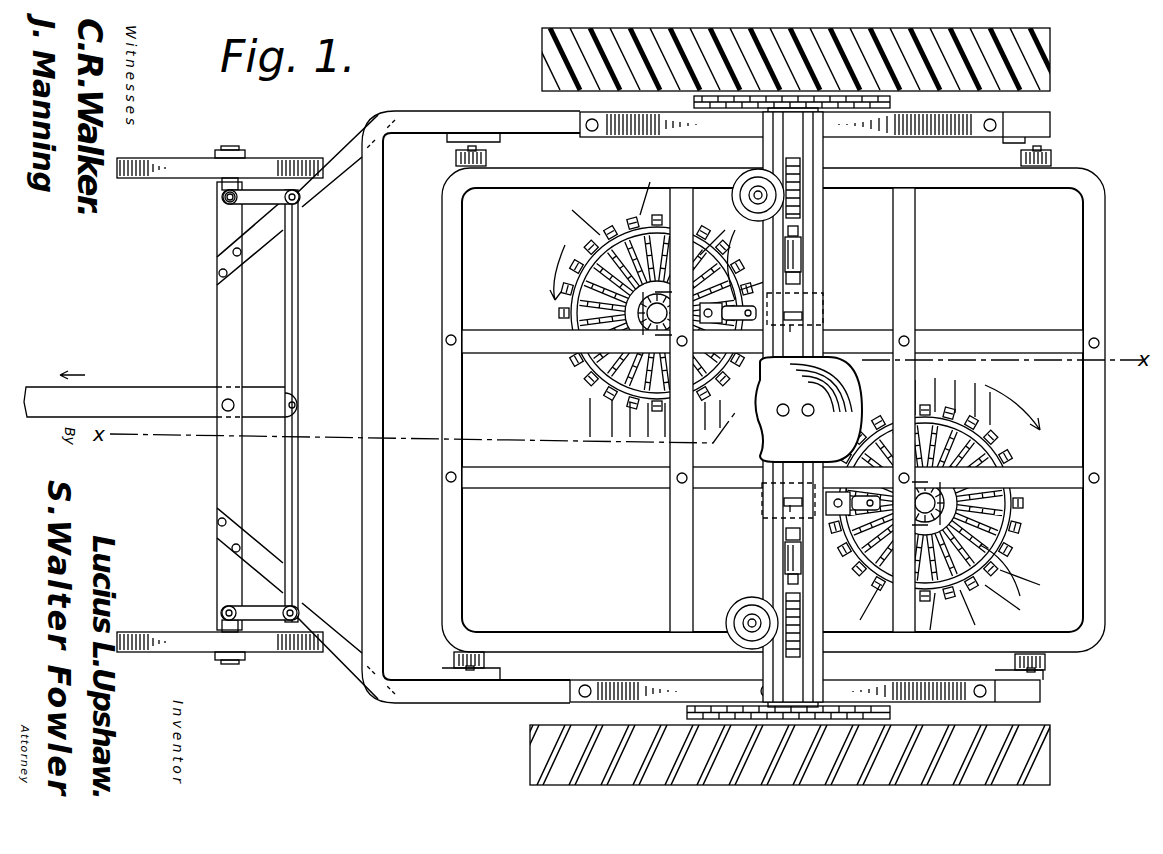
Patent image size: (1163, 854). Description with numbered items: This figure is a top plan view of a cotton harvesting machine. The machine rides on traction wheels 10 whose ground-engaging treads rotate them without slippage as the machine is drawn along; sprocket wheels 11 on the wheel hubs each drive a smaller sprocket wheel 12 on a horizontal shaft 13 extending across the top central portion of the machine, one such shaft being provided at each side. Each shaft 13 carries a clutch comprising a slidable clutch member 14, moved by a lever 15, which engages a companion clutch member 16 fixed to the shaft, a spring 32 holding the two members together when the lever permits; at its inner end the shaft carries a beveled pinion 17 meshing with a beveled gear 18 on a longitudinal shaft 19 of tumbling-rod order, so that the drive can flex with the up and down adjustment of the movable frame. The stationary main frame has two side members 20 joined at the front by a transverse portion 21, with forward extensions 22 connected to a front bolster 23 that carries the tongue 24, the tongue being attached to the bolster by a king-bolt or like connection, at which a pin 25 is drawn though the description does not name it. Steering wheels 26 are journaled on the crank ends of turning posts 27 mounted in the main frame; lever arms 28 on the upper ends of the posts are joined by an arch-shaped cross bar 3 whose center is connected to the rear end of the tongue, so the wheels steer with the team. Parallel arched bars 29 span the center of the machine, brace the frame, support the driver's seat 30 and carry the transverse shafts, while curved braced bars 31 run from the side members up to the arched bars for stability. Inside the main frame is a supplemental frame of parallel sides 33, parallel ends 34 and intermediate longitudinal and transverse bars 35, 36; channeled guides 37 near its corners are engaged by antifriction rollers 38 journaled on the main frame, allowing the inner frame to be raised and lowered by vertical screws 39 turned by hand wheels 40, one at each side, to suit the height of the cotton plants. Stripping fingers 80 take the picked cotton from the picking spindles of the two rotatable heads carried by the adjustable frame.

The arch-shaped cross bar 3 is at (295, 316).
The traction wheels 10 is at (1048, 70).
The sprocket wheels 11 is at (694, 101).
The smaller sprocket wheel 12 is at (780, 95).
The horizontal shaft 13 is at (793, 150).
The slidable clutch member 14 is at (801, 252).
The lever 15 is at (800, 233).
The companion clutch member 16 is at (800, 276).
The beveled pinion 17 is at (823, 301).
The beveled gear 18 is at (823, 320).
The longitudinal shaft 19 is at (791, 418).
The side members 20 is at (438, 122).
The transverse portion 21 is at (360, 388).
The extensions 22 is at (310, 200).
The front bolster 23 is at (218, 353).
The tongue 24 is at (154, 402).
The pin 25 is at (222, 410).
The steering wheels 26 is at (188, 160).
The turning posts 27 is at (224, 198).
The lever arms 28 is at (262, 196).
The parallel arched bars 29 is at (820, 150).
The driver's seat 30 is at (808, 409).
The curved braced bars 31 is at (630, 136).
The spring 32 is at (803, 195).
The parallel sides 33 is at (500, 178).
The parallel ends 34 is at (443, 526).
The intermediate longitudinal bars 35 is at (978, 336).
The intermediate transverse bars 36 is at (916, 259).
The channeled guides 37 is at (456, 157).
The antifriction rollers 38 is at (486, 158).
The vertical screws 39 is at (752, 190).
The hand wheels 40 is at (728, 200).
The stripping fingers 80 is at (735, 228).